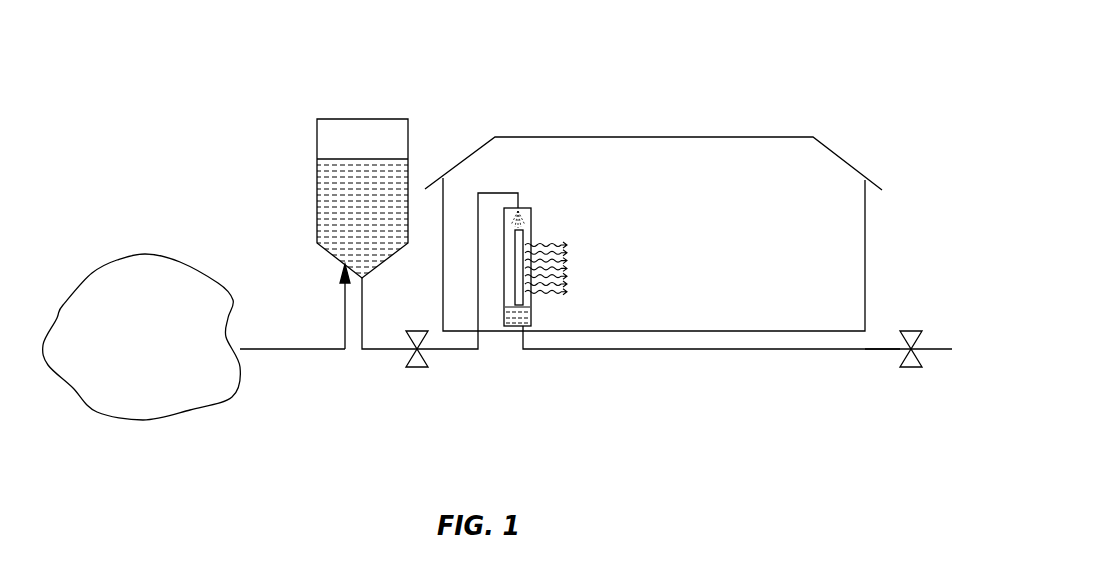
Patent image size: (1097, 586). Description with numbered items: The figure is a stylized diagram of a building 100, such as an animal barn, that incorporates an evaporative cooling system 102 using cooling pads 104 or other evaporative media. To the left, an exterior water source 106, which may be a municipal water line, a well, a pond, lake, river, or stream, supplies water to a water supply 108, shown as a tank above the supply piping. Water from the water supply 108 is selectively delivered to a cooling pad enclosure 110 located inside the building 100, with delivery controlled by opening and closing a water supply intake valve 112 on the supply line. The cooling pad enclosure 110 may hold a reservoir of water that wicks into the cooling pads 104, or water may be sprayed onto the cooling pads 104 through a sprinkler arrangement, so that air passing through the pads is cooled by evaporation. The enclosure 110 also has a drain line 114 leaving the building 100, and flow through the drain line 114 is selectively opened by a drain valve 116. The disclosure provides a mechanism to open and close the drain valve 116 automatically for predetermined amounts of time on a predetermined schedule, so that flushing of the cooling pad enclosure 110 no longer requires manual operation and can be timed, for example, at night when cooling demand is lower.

The building 100 is at (884, 106).
The evaporative cooling system 102 is at (700, 358).
The cooling pads 104 is at (522, 298).
The exterior water source 106 is at (133, 376).
The water supply 108 is at (372, 119).
The cooling pad enclosure 110 is at (531, 233).
The water supply intake valve 112 is at (417, 370).
The drain line 114 is at (864, 351).
The drain valve 116 is at (903, 331).